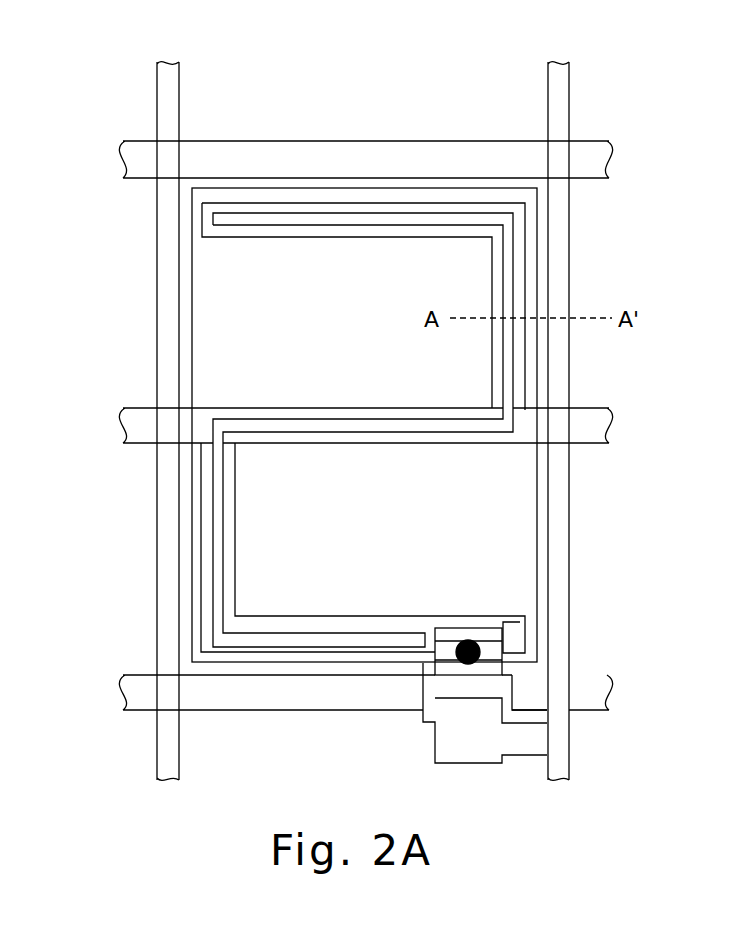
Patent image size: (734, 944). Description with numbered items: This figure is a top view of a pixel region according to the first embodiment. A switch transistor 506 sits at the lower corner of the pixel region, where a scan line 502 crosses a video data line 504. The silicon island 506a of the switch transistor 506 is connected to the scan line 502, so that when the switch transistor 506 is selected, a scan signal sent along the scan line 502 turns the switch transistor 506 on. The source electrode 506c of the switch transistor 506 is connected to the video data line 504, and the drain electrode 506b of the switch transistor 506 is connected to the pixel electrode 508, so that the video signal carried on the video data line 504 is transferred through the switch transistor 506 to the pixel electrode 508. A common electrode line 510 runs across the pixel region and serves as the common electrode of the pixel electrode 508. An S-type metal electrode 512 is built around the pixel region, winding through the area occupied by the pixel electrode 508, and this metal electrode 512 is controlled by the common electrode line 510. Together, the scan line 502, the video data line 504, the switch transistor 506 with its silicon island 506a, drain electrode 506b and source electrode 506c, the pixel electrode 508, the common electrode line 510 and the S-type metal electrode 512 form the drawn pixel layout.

The scan line 502 is at (598, 164).
The video data line 504 is at (566, 72).
The switch transistor 506 is at (578, 695).
The silicon island 506a is at (493, 688).
The drain electrode 506b is at (482, 652).
The source electrode 506c is at (493, 744).
The pixel electrode 508 is at (200, 340).
The common electrode line 510 is at (598, 428).
The S-type metal electrode 512 is at (203, 203).